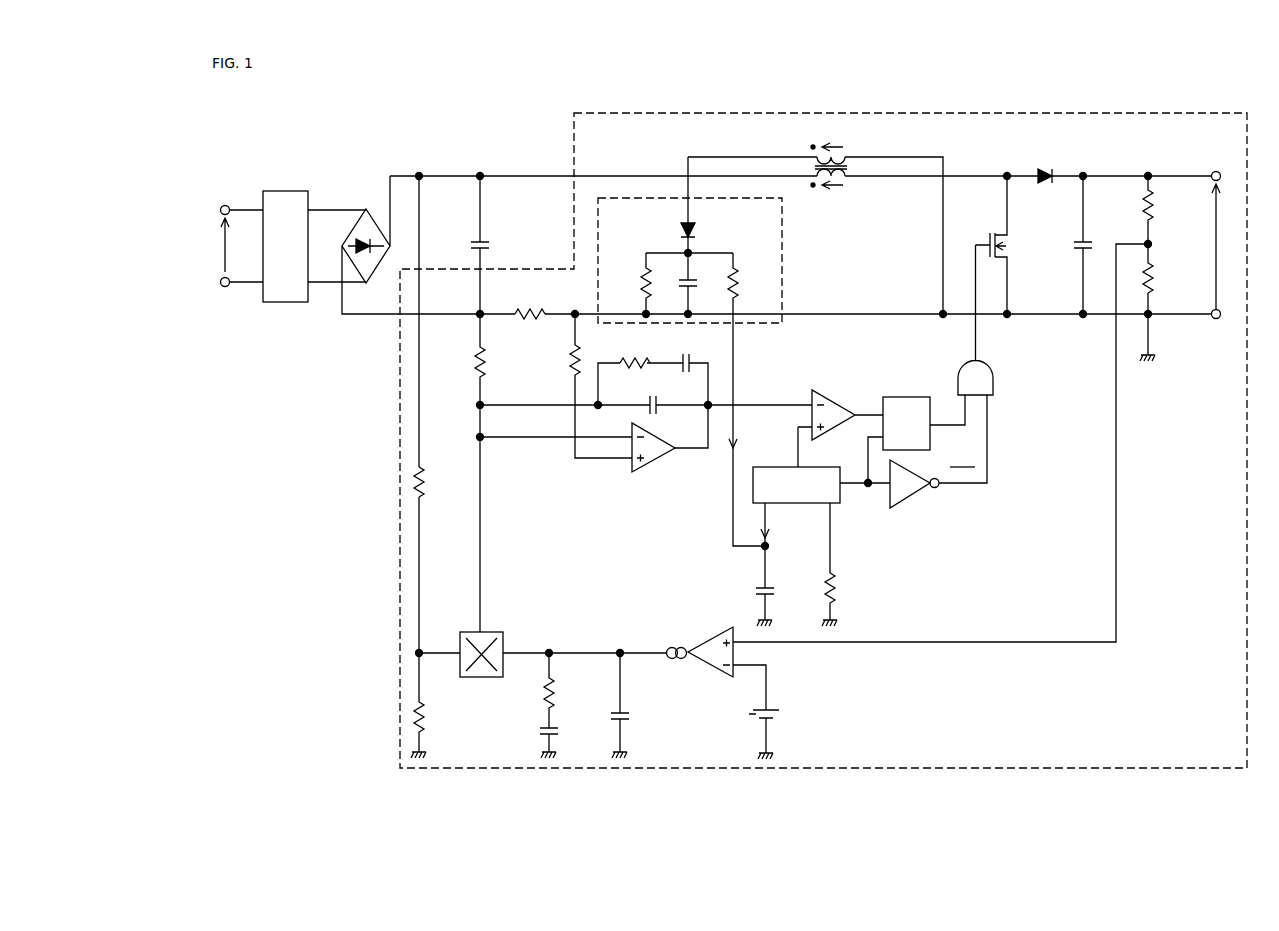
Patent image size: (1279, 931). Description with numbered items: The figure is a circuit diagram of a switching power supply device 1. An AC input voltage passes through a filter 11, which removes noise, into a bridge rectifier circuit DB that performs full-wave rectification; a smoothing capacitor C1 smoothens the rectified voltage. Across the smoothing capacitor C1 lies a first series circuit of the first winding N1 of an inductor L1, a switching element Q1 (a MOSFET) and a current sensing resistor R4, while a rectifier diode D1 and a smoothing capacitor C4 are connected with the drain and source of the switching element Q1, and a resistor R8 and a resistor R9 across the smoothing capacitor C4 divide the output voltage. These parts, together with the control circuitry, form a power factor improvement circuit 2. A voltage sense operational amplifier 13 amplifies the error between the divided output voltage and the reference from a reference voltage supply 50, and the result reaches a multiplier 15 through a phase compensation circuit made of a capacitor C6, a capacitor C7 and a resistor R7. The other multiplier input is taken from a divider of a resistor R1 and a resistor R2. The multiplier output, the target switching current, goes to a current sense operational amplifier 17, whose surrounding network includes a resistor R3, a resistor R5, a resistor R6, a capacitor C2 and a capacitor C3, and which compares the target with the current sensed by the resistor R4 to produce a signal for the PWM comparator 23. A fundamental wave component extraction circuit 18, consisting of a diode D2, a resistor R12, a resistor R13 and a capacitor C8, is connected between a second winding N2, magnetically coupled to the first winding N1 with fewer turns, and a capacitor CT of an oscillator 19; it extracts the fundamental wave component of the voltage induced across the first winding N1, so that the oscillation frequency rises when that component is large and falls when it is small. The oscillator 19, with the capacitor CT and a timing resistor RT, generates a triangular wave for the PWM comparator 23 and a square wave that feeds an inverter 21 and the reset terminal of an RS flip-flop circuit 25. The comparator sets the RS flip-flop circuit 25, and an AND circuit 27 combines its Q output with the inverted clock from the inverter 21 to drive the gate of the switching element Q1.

The switching power supply device 1 is at (508, 120).
The power factor improvement circuit 2 is at (1219, 113).
The filter 11 is at (284, 191).
The voltage sense operational amplifier 13 is at (710, 637).
The multiplier 15 is at (497, 632).
The current sense operational amplifier 17 is at (652, 431).
The fundamental wave component extraction circuit 18 is at (783, 248).
The oscillator 19 is at (816, 467).
The inverter 21 is at (888, 506).
The PWM comparator 23 is at (830, 403).
The RS flip-flop circuit 25 is at (904, 396).
The AND circuit 27 is at (994, 376).
The reference voltage supply 50 is at (772, 710).
The bridge rectifier circuit DB is at (353, 233).
The smoothing capacitor C1 is at (477, 242).
The capacitor C2 is at (691, 362).
The capacitor C3 is at (658, 400).
The smoothing capacitor C4 is at (1089, 242).
The capacitor C6 is at (556, 728).
The capacitor C7 is at (628, 714).
The capacitor C8 is at (695, 279).
The capacitor CT is at (772, 589).
The resistor RT is at (836, 584).
The resistor R1 is at (424, 479).
The resistor R2 is at (425, 710).
The resistor R3 is at (486, 354).
The resistor R4 is at (530, 309).
The resistor R5 is at (569, 379).
The resistor R6 is at (632, 357).
The resistor R7 is at (554, 686).
The resistor R8 is at (1151, 202).
The resistor R9 is at (1151, 275).
The resistor R12 is at (640, 279).
The resistor R13 is at (738, 276).
The rectifier diode D1 is at (1046, 186).
The diode D2 is at (693, 233).
The switching element Q1 is at (991, 232).
The inductor L1 is at (816, 218).
The first winding N1 is at (863, 198).
The second winding N2 is at (881, 143).